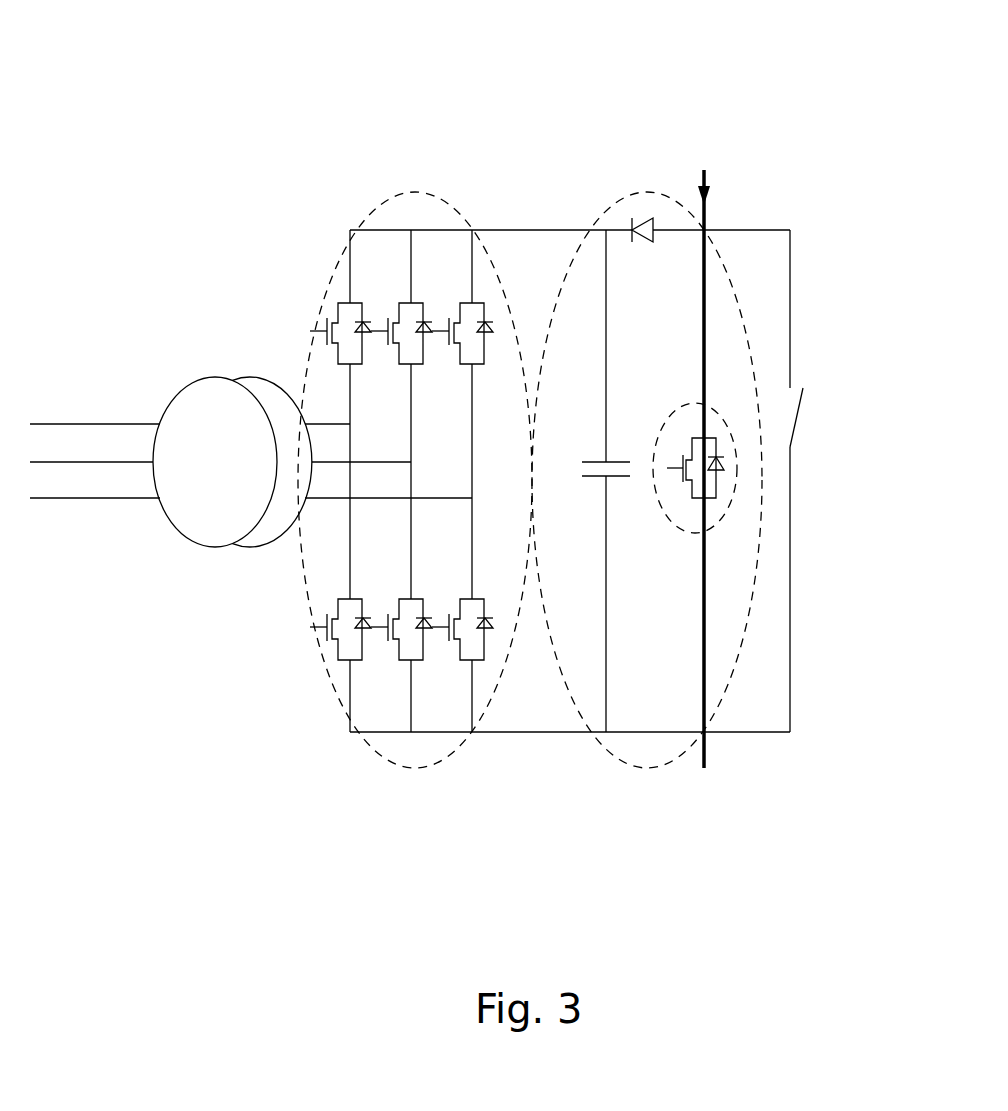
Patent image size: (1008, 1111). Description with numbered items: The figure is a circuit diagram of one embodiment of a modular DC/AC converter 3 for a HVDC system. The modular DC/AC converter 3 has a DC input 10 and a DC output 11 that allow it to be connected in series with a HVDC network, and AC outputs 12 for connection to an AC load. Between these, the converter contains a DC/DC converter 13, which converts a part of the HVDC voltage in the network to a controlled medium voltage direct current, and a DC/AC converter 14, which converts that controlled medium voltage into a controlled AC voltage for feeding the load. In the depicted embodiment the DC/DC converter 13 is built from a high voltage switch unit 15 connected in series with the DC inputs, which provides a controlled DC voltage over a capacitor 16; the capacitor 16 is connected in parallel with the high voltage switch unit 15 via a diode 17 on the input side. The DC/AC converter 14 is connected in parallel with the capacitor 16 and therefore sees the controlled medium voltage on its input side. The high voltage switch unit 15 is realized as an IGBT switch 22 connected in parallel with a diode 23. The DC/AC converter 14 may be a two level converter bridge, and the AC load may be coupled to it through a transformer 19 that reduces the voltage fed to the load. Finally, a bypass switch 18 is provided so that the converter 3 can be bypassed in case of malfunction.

The modular DC/AC converter 3 is at (186, 99).
The DC input 10 is at (707, 306).
The DC output 11 is at (705, 645).
The AC outputs 12 is at (84, 424).
The DC/DC converter 13 is at (647, 768).
The DC/AC converter 14 is at (415, 768).
The high voltage switch unit 15 is at (740, 493).
The capacitor 16 is at (622, 476).
The diode 17 is at (643, 218).
The bypass switch 18 is at (803, 415).
The transformer 19 is at (172, 400).
The IGBT switch 22 is at (686, 462).
The diode 23 is at (724, 462).